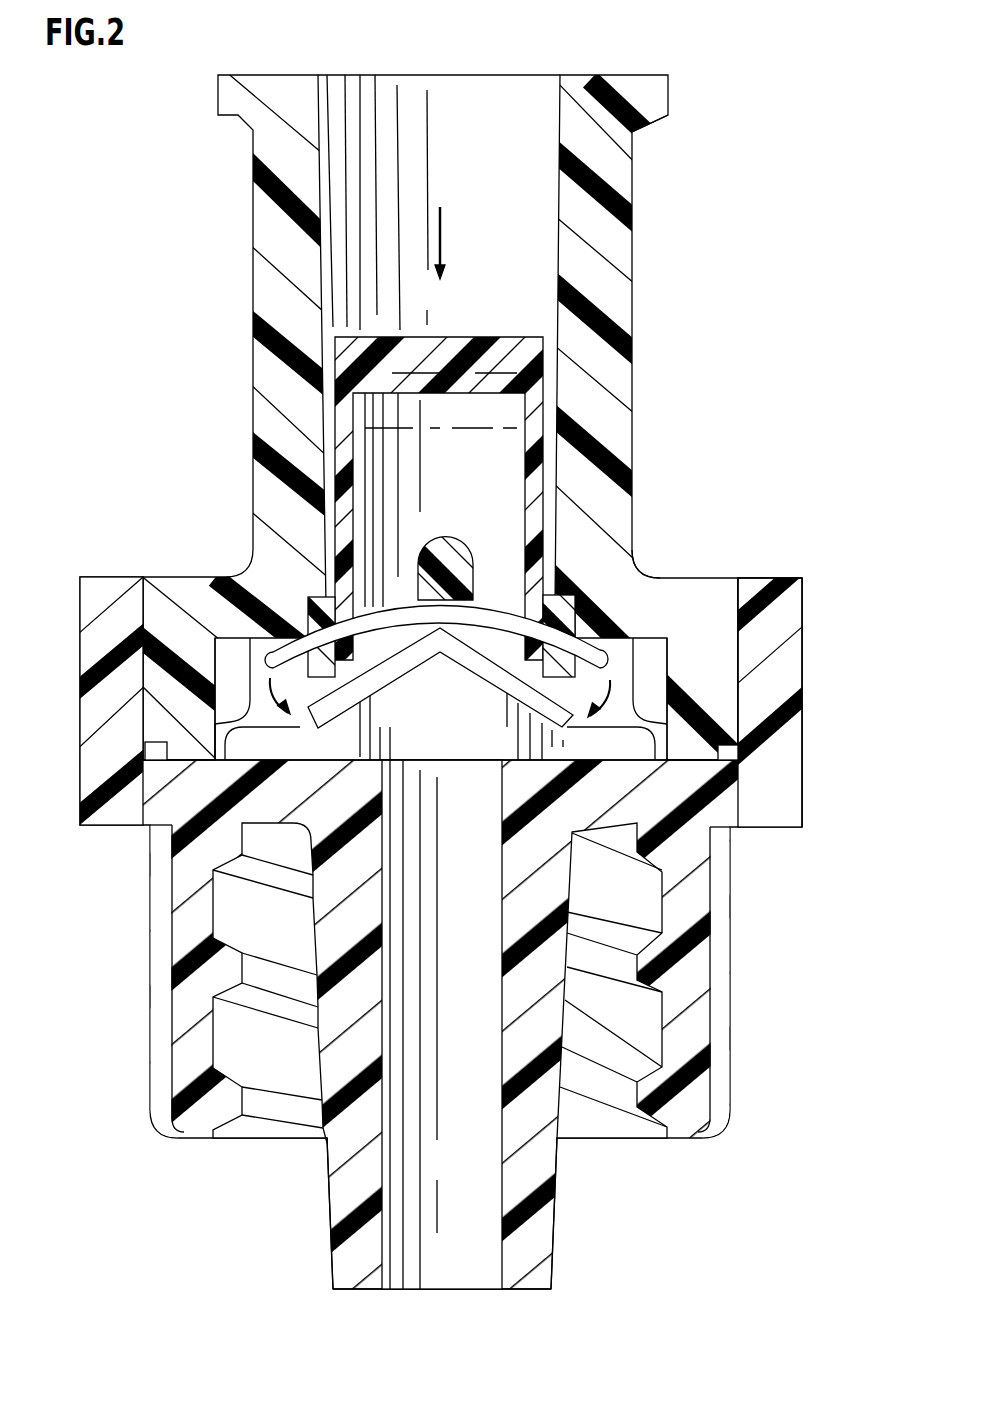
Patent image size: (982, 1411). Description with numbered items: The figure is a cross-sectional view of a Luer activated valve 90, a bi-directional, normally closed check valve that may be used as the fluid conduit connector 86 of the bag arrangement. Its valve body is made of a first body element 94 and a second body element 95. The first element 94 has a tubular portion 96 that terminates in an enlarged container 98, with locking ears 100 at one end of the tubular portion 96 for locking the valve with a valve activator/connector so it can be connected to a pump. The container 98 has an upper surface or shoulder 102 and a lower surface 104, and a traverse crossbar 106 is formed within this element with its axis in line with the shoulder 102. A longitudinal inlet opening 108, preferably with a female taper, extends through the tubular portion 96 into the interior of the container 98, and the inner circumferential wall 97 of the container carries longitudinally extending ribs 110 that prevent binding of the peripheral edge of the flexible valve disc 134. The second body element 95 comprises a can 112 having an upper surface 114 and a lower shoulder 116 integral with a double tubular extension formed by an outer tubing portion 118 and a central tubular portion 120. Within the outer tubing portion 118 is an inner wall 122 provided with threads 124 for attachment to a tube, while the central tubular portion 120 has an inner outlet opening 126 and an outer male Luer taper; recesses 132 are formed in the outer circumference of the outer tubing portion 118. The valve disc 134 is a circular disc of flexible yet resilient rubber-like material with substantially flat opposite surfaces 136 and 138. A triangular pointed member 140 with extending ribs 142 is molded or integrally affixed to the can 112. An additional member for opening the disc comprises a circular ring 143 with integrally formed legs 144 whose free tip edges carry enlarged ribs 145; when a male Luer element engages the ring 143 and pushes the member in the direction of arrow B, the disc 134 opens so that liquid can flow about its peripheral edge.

The fluid conduit connector 86 is at (723, 103).
The Luer activated valve 90 is at (633, 255).
The first body element 94 is at (598, 397).
The second body element 95 is at (785, 803).
The tubular portion 96 is at (265, 292).
The inner circumferential wall 97 is at (217, 733).
The enlarged container 98 is at (190, 630).
The locking ears 100 is at (650, 83).
The upper surface or shoulder 102 is at (700, 578).
The lower surface 104 is at (697, 758).
The traverse crossbar 106 is at (442, 545).
The longitudinal inlet opening 108 is at (498, 100).
The longitudinally extending ribs 110 is at (652, 672).
The can 112 is at (780, 688).
The upper surface 114 is at (775, 578).
The lower shoulder 116 is at (770, 830).
The outer tubing portion 118 is at (703, 953).
The central tubular portion 120 is at (547, 1152).
The inner wall 122 is at (660, 1022).
The threads 124 is at (687, 957).
The inner outlet opening 126 is at (473, 1268).
The recesses 132 is at (715, 1043).
The valve disc 134 is at (623, 567).
The surface 136 is at (313, 623).
The surface 138 is at (300, 665).
The triangular pointed member 140 is at (425, 695).
The extending ribs 142 is at (268, 753).
The circular ring 143 is at (515, 357).
The legs 144 is at (342, 457).
The enlarged ribs 145 is at (545, 607).